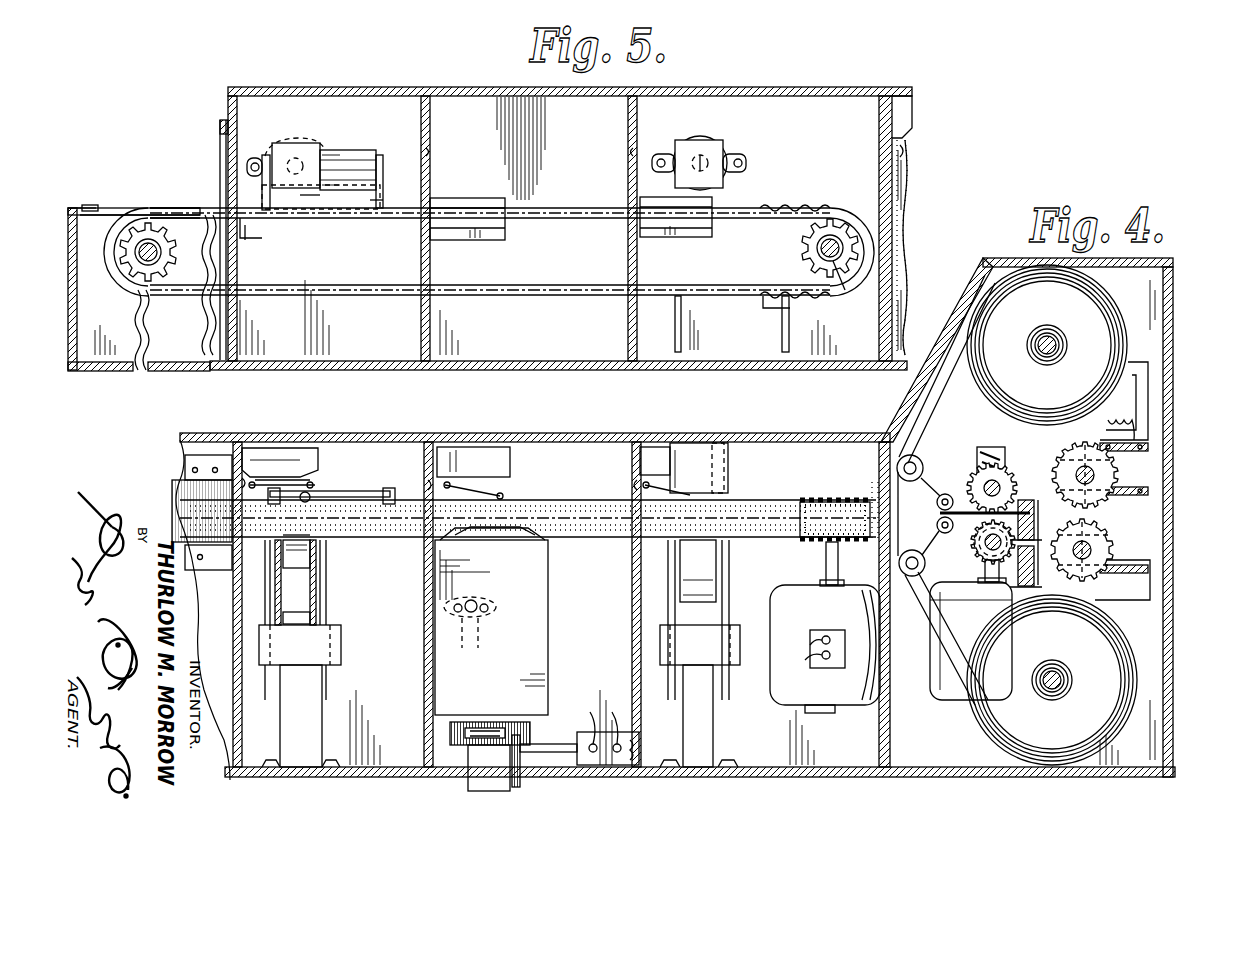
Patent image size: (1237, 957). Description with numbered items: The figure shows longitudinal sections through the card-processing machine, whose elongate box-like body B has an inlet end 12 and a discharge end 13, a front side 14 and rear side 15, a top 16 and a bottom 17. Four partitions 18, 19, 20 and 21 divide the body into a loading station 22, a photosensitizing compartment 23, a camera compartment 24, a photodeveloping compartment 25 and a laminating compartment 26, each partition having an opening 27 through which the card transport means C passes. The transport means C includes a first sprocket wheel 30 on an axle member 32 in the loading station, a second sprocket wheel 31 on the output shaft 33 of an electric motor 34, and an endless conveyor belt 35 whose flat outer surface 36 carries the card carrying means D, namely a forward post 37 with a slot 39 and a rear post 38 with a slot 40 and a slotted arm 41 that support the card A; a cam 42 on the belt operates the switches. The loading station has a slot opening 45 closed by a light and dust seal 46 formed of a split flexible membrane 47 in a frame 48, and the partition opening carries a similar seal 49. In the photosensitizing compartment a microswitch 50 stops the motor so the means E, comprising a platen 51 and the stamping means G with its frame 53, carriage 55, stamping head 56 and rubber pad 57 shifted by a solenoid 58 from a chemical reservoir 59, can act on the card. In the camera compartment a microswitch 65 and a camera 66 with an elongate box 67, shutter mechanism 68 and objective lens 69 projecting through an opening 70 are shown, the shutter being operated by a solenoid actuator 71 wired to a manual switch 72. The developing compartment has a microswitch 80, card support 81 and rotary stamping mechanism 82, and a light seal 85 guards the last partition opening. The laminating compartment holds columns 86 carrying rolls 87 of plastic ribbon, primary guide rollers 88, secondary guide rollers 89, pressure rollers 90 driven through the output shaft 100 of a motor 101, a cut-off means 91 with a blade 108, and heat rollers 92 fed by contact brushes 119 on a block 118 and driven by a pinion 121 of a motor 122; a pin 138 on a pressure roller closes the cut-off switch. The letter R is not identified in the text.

In FIG. 5, the inlet end 12 is at (400, 130).
In FIG. 4, the discharge end 13 is at (1168, 302).
In FIG. 4, the front side 14 is at (348, 778).
In FIG. 5, the rear side 15 is at (500, 371).
In FIG. 4, the rear side 15 is at (676, 444).
In FIG. 5, the top 16 is at (368, 90).
In FIG. 5, the bottom 17 is at (300, 371).
In FIG. 4, the bottom 17 is at (772, 772).
In FIG. 5, the partition 18 is at (242, 333).
In FIG. 4, the partition 18 is at (242, 737).
In FIG. 5, the partition 19 is at (431, 333).
In FIG. 4, the partition 19 is at (424, 745).
In FIG. 5, the partition 20 is at (629, 333).
In FIG. 4, the partition 20 is at (632, 665).
In FIG. 5, the partition 21 is at (912, 118).
In FIG. 4, the partition 21 is at (890, 750).
In FIG. 5, the loading station 22 is at (110, 215).
In FIG. 5, the photosensitizing compartment 23 is at (329, 228).
In FIG. 4, the photosensitizing compartment 23 is at (323, 471).
In FIG. 5, the camera compartment 24 is at (542, 148).
In FIG. 4, the camera compartment 24 is at (526, 611).
In FIG. 5, the photodeveloping compartment 25 is at (763, 229).
In FIG. 4, the photodeveloping compartment 25 is at (813, 611).
In FIG. 4, the laminating compartment 26 is at (1078, 517).
In FIG. 5, the opening 27 is at (432, 150).
In FIG. 4, the opening 27 is at (905, 503).
In FIG. 5, the first sprocket wheel 30 is at (175, 285).
In FIG. 5, the second sprocket wheel 31 is at (830, 224).
In FIG. 4, the second sprocket wheel 31 is at (815, 502).
In FIG. 5, the axle member 32 is at (136, 260).
In FIG. 5, the output shaft 33 is at (836, 275).
In FIG. 4, the output shaft 33 is at (826, 572).
In FIG. 4, the electric motor 34 is at (825, 649).
In FIG. 5, the conveyor belt 35 is at (583, 220).
In FIG. 4, the conveyor belt 35 is at (600, 538).
In FIG. 5, the flat outer surface 36 is at (758, 209).
In FIG. 5, the forward post 37 is at (384, 165).
In FIG. 4, the forward post 37 is at (392, 498).
In FIG. 5, the rear post 38 is at (266, 158).
In FIG. 4, the rear post 38 is at (270, 540).
In FIG. 4, the longitudinal slot 39 is at (336, 513).
In FIG. 5, the longitudinal slot 40 is at (292, 143).
In FIG. 4, the longitudinal slot 40 is at (284, 494).
In FIG. 5, the slotted arm 41 is at (290, 225).
In FIG. 4, the cam 42 is at (292, 497).
In FIG. 5, the slot opening 45 is at (125, 216).
In FIG. 5, the light and dust seal 46 is at (180, 214).
In FIG. 5, the split flexible membrane 47 is at (172, 206).
In FIG. 5, the frame 48 is at (96, 204).
In FIG. 5, the light and dust seal 49 is at (222, 158).
In FIG. 5, the microswitch 50 is at (248, 230).
In FIG. 4, the microswitch 50 is at (268, 455).
In FIG. 5, the platen 51 is at (284, 150).
In FIG. 4, the platen 51 is at (300, 460).
In FIG. 4, the frame 53 is at (326, 592).
In FIG. 4, the carriage 55 is at (268, 600).
In FIG. 4, the stamping head 56 is at (306, 556).
In FIG. 4, the rubber pad 57 is at (312, 535).
In FIG. 4, the solenoid 58 is at (294, 665).
In FIG. 4, the reservoir 59 is at (320, 702).
In FIG. 5, the microswitch 65 is at (478, 232).
In FIG. 4, the microswitch 65 is at (500, 448).
In FIG. 4, the camera 66 is at (551, 608).
In FIG. 4, the elongate box 67 is at (549, 647).
In FIG. 4, the shutter mechanism 68 is at (482, 725).
In FIG. 4, the objective lens 69 is at (470, 780).
In FIG. 4, the opening 70 is at (522, 785).
In FIG. 4, the solenoid actuator 71 is at (594, 735).
In FIG. 4, the manually operable switch 72 is at (495, 600).
In FIG. 5, the microswitch 80 is at (672, 230).
In FIG. 4, the microswitch 80 is at (650, 450).
In FIG. 5, the solenoid actuated card support 81 is at (714, 152).
In FIG. 4, the solenoid actuated card support 81 is at (700, 455).
In FIG. 4, the rotary stamping mechanism 82 is at (738, 692).
In FIG. 5, the light seal 85 is at (892, 250).
In FIG. 4, the light seal 85 is at (875, 500).
In FIG. 4, the vertical column 86 is at (1042, 338).
In FIG. 4, the roll of raw plastic ribbon 87 is at (1107, 335).
In FIG. 4, the primary guide roller 88 is at (915, 462).
In FIG. 4, the secondary guide roller 89 is at (945, 497).
In FIG. 4, the pressure roller 90 is at (985, 458).
In FIG. 4, the cut-off means 91 is at (1030, 592).
In FIG. 4, the heat roller 92 is at (1112, 462).
In FIG. 4, the output shaft 100 is at (985, 590).
In FIG. 4, the electric motor 101 is at (932, 682).
In FIG. 4, the blade 108 is at (1045, 550).
In FIG. 4, the block 118 is at (1150, 587).
In FIG. 4, the contact brush 119 is at (1150, 445).
In FIG. 4, the drive pinion 121 is at (1125, 420).
In FIG. 4, the electric motor 122 is at (1142, 390).
In FIG. 4, the pin 138 is at (968, 546).
In FIG. 5, the card A is at (330, 205).
In FIG. 4, the card A is at (352, 505).
In FIG. 5, the body B is at (808, 88).
In FIG. 4, the body B is at (1176, 750).
In FIG. 5, the card transport means C is at (385, 300).
In FIG. 4, the card transport means C is at (416, 540).
In FIG. 5, the card carrying means D is at (378, 210).
In FIG. 4, the card carrying means D is at (387, 522).
In FIG. 4, the photosensitizing means E is at (345, 635).
In FIG. 4, the stamping means G is at (344, 655).
In FIG. 4, the belt R is at (933, 398).